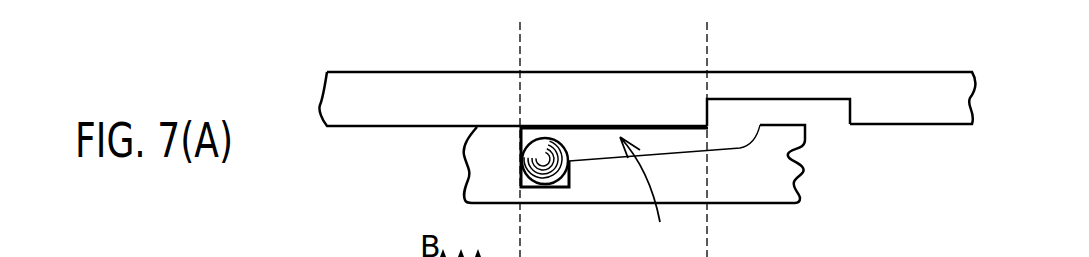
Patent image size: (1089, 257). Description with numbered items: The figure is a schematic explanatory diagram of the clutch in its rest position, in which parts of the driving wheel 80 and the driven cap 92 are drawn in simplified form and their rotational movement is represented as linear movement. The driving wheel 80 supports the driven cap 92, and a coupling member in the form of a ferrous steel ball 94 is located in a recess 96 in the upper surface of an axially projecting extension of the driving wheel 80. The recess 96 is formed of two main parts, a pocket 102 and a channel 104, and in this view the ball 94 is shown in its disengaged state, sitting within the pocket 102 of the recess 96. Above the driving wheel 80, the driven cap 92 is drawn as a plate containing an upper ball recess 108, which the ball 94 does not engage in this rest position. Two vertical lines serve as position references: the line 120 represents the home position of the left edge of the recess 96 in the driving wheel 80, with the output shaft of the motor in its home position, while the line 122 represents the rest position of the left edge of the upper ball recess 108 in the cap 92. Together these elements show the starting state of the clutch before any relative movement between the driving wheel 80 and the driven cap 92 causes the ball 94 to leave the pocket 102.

The driven cap 92 is at (955, 92).
The upper ball recess 108 is at (827, 107).
The line representing home position of left edge of recess 120 is at (519, 39).
The line representing rest position of left edge of upper ball recess 122 is at (708, 40).
The driving wheel 80 is at (792, 180).
The pocket 102 is at (519, 186).
The ferrous steel ball 94 is at (548, 177).
The channel 104 is at (683, 138).
The recess 96 is at (650, 195).